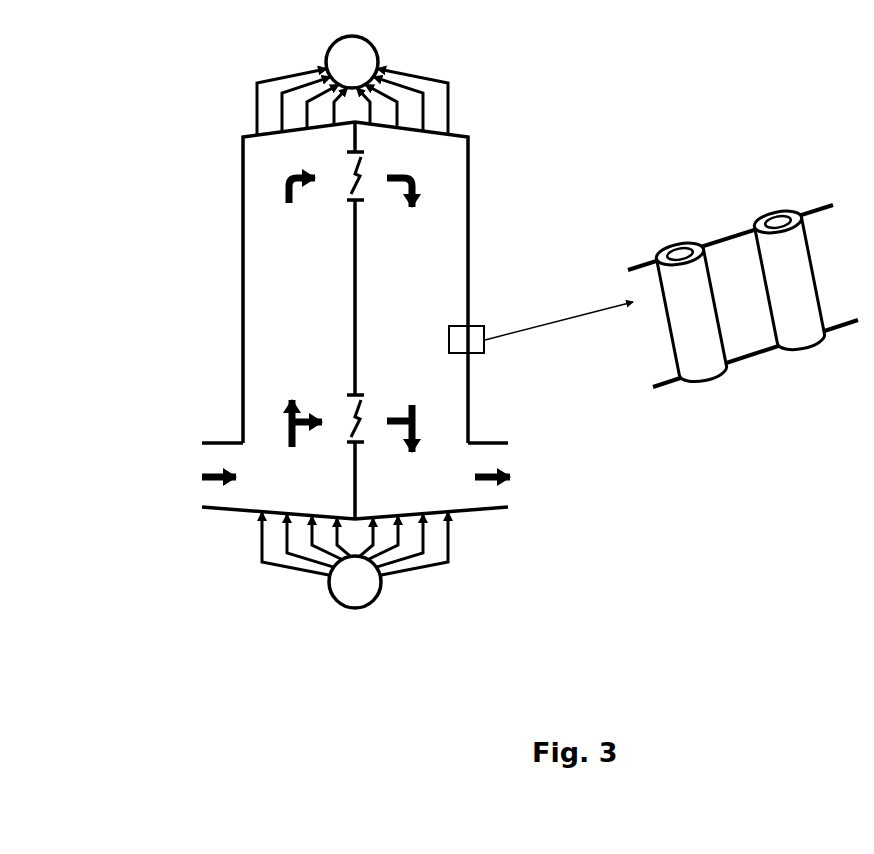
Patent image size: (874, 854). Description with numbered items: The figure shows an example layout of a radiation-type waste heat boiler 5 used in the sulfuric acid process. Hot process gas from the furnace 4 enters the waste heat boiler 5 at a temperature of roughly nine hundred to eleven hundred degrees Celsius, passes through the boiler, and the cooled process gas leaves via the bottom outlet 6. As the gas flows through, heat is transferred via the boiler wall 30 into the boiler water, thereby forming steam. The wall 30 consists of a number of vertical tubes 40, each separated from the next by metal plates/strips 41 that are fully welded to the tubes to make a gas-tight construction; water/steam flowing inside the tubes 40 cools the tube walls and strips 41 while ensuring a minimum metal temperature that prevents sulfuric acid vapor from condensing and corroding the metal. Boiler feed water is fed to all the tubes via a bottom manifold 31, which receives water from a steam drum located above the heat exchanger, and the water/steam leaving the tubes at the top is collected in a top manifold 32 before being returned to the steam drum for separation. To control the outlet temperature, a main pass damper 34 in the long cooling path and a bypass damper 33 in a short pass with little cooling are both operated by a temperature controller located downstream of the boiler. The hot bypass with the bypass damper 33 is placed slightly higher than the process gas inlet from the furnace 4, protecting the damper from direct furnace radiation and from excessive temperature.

The furnace 4 is at (202, 466).
The waste heat boiler 5 is at (397, 335).
The bottom outlet 6 is at (504, 467).
The boiler wall 30 is at (430, 145).
The bottom manifold 31 is at (355, 577).
The top manifold 32 is at (352, 82).
The bypass damper 33 is at (352, 426).
The main pass damper 34 is at (350, 183).
The vertical tubes 40 is at (743, 300).
The metal plates/strips 41 is at (755, 338).